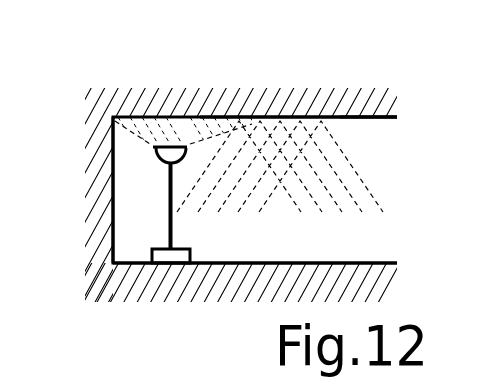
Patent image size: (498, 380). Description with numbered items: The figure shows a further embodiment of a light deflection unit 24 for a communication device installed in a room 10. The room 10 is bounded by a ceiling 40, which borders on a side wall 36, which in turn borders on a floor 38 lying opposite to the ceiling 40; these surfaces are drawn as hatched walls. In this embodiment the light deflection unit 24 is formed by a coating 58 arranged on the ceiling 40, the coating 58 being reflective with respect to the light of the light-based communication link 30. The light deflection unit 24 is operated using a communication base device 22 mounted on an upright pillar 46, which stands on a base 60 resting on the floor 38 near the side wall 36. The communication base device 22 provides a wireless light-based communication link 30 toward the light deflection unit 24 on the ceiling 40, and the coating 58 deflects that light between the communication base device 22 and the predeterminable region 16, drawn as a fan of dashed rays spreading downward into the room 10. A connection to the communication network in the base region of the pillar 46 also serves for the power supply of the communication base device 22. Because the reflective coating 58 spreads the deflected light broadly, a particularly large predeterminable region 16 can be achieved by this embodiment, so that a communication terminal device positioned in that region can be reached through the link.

The room 10 is at (324, 92).
The predeterminable region 16 is at (335, 188).
The communication base device 22 is at (150, 156).
The light deflection unit 24 is at (250, 117).
The light-based communication link 30 is at (178, 117).
The side wall 36 is at (100, 248).
The floor 38 is at (378, 262).
The ceiling 40 is at (347, 118).
The pillar 46 is at (168, 176).
The coating 58 is at (373, 112).
The base 60 is at (166, 258).